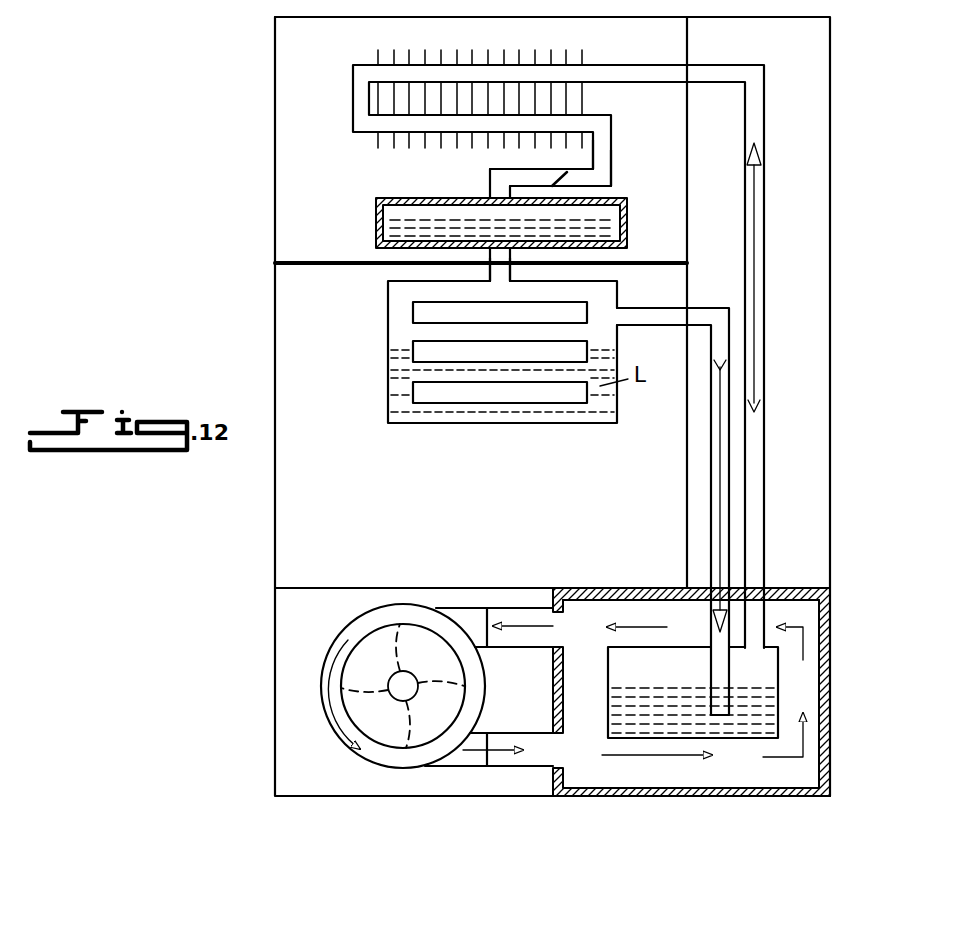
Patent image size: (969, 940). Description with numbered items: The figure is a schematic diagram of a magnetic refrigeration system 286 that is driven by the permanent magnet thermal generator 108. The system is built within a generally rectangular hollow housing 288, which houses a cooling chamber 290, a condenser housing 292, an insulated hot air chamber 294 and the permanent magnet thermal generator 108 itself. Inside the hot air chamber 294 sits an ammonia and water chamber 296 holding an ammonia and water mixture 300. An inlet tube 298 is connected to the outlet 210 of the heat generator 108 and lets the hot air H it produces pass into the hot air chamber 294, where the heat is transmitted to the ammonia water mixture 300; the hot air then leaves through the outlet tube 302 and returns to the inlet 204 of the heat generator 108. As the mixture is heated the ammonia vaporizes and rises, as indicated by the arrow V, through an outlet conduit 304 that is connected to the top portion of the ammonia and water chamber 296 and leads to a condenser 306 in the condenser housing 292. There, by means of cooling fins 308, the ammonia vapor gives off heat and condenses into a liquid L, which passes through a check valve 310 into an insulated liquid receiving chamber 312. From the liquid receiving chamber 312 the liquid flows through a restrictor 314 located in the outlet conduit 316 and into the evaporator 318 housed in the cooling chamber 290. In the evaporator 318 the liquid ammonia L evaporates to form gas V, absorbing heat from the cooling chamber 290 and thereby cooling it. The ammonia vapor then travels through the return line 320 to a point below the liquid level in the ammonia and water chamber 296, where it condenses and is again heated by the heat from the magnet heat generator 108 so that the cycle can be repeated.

The permanent magnet thermal generator 108 is at (323, 717).
The inlet 204 is at (503, 602).
The outlet 210 is at (497, 763).
The magnetic refrigeration system 286 is at (256, 272).
The hollow housing 288 is at (270, 350).
The cooling chamber 290 is at (274, 521).
The condenser housing 292 is at (274, 131).
The insulated hot air chamber 294 is at (783, 593).
The ammonia and water chamber 296 is at (770, 740).
The inlet tube 298 is at (533, 763).
The ammonia water mixture 300 is at (612, 738).
The outlet tube 302 is at (526, 598).
The outlet conduit 304 is at (757, 520).
The condenser 306 is at (593, 62).
The cooling fins 308 is at (538, 62).
The check valve 310 is at (612, 183).
The insulated liquid receiving chamber 312 is at (628, 222).
The restrictor 314 is at (507, 268).
The outlet conduit 316 is at (488, 260).
The evaporator 318 is at (388, 406).
The return line 320 is at (710, 463).